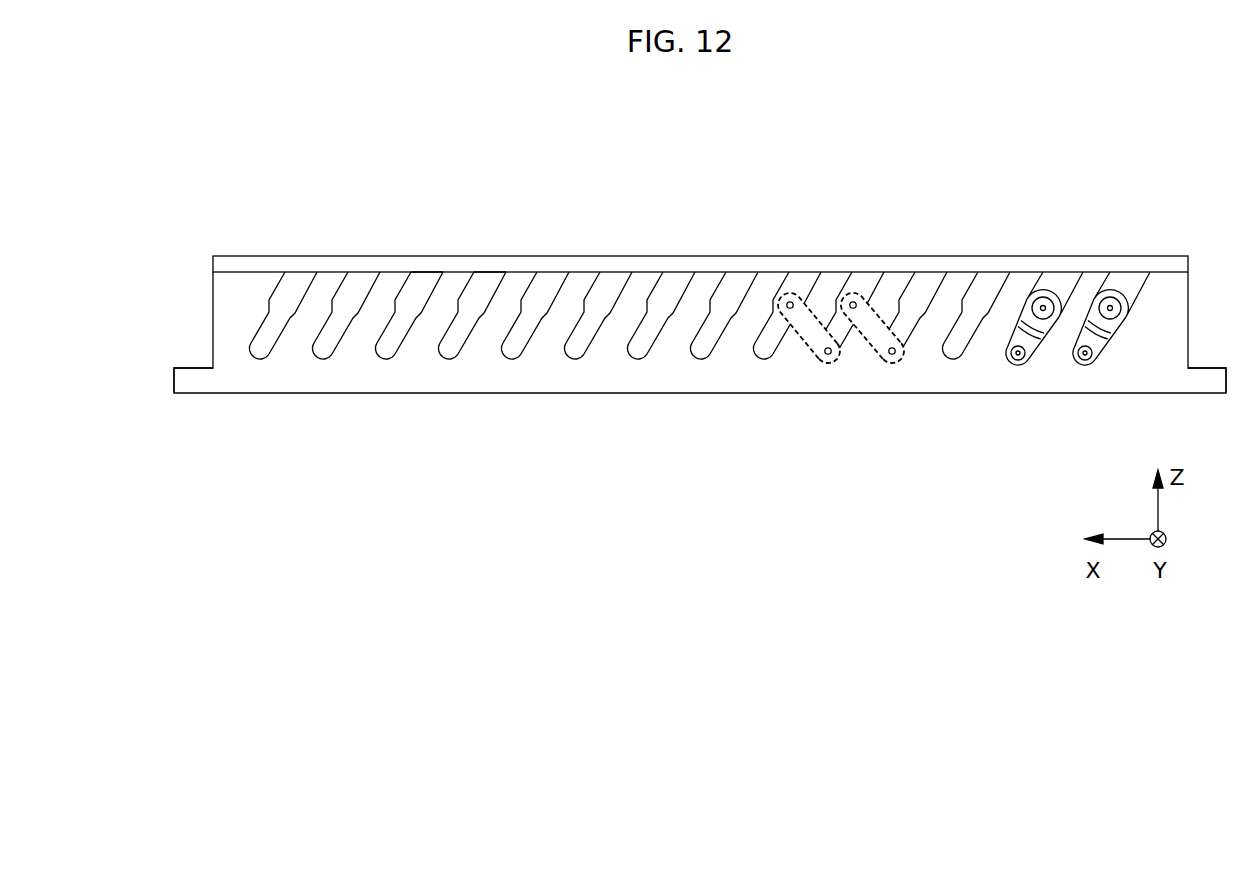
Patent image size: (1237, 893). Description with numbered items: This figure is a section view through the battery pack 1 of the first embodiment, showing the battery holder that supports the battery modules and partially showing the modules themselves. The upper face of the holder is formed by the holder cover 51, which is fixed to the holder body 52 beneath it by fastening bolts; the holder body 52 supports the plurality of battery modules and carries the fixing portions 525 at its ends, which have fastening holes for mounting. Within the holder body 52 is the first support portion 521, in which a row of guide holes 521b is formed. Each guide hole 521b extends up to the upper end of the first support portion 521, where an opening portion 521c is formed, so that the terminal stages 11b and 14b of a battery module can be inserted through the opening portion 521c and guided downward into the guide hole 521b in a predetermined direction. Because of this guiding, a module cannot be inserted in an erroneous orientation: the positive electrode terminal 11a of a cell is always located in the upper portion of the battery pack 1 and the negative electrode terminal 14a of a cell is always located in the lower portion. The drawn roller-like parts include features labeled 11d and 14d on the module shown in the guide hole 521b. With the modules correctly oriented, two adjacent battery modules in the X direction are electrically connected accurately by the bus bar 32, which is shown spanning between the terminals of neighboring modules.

The battery pack 1 is at (628, 245).
The holder cover 51 is at (340, 267).
The holder body 52 is at (567, 397).
The first support portion 521 is at (658, 374).
The guide hole 521b is at (391, 358).
The opening portion 521c is at (425, 278).
The fixing portions 525 is at (188, 382).
The positive electrode terminal 11a is at (789, 295).
The terminal stage 11b is at (1043, 296).
The roller housing 11d is at (1059, 296).
The negative electrode terminal 14a is at (828, 357).
The terminal stage 14b is at (1014, 364).
The roller shaft center 14d is at (1043, 311).
The bus bar 32 is at (807, 345).